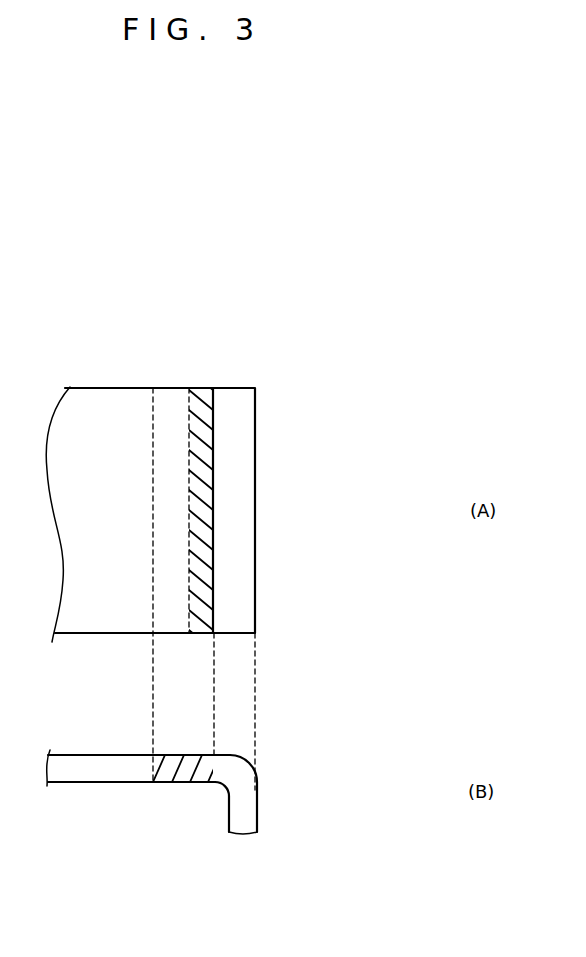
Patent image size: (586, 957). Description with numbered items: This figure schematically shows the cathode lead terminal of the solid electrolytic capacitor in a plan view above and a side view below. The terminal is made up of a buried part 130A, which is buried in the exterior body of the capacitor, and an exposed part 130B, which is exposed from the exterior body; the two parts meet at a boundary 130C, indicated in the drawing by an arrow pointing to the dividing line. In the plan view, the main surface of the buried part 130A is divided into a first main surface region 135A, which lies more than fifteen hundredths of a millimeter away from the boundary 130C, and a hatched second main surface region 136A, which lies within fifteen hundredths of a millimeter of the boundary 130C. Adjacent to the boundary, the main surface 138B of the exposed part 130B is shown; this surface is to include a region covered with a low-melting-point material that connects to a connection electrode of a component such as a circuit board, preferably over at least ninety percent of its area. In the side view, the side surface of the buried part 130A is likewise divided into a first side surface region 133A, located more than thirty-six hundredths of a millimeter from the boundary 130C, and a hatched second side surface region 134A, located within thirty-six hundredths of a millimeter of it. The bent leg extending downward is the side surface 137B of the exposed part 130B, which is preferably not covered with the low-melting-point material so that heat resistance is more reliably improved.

The buried part 130A is at (149, 593).
The first main surface region 135A is at (172, 410).
The second main surface region 136A is at (200, 408).
The boundary 130C is at (217, 423).
The main surface 138B is at (238, 484).
The exposed part 130B is at (233, 637).
The side surface 137B is at (243, 789).
The first side surface region 133A is at (85, 770).
The second side surface region 134A is at (188, 768).